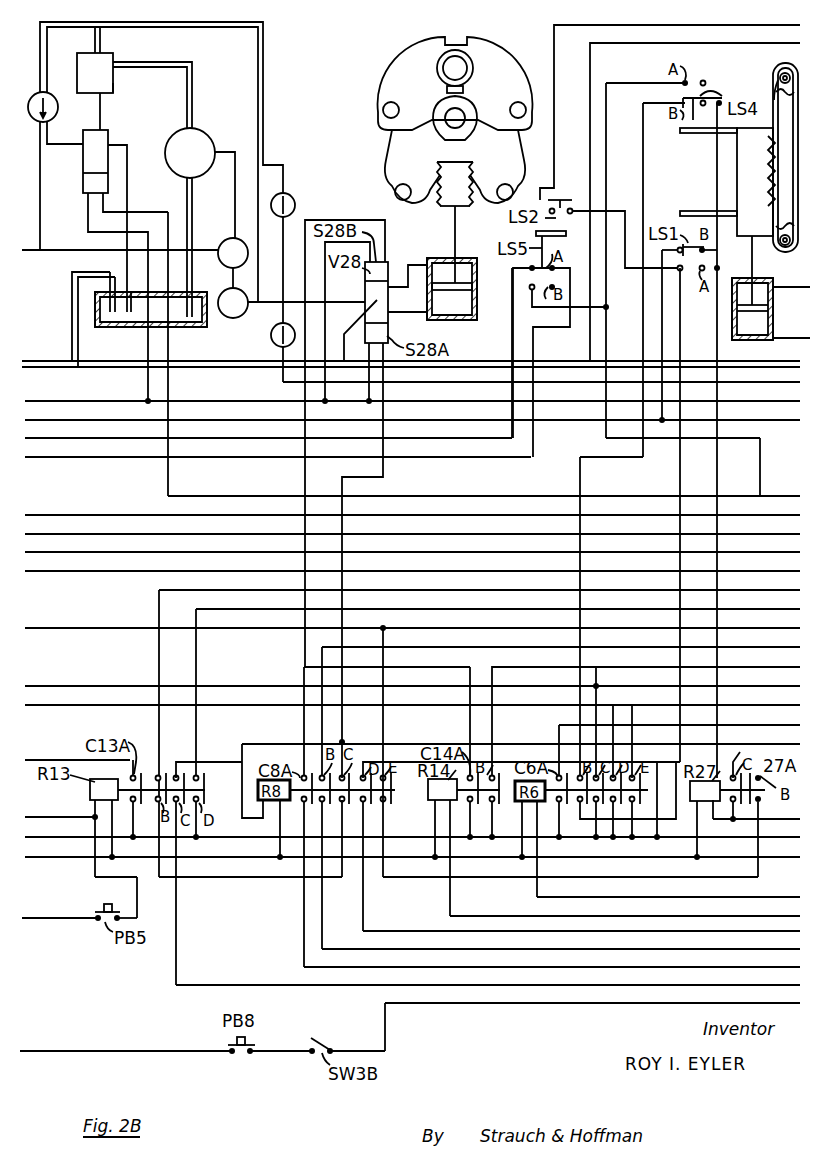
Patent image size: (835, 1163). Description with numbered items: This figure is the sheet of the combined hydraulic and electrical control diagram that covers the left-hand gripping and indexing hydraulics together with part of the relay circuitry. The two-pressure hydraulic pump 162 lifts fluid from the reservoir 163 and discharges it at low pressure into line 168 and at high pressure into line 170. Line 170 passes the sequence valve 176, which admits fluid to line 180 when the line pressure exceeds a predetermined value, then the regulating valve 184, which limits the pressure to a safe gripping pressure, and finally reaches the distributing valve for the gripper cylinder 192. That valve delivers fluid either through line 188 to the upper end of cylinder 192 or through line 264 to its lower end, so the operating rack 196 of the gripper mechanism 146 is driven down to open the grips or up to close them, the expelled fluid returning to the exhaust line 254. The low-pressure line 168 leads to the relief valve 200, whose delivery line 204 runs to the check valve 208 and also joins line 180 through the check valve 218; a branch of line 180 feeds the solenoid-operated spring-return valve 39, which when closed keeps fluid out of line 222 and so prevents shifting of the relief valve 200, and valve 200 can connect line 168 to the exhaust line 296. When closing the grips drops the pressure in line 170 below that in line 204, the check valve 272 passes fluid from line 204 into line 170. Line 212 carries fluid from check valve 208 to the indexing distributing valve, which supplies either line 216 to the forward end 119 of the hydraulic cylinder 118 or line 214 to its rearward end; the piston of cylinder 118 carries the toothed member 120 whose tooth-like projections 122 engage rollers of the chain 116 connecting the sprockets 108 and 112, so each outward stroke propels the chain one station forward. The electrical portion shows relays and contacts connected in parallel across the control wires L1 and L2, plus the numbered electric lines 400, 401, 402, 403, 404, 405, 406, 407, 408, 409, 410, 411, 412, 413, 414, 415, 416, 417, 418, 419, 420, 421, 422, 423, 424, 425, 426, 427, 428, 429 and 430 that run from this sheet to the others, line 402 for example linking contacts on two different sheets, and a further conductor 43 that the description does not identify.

The relief valve 200 is at (106, 83).
The low-pressure line 168 is at (194, 72).
The delivery line 204 is at (263, 42).
The check valve 218 is at (55, 101).
The line 222 is at (97, 119).
The solenoid-operated spring-return valve 39 is at (83, 188).
The exhaust line 296 is at (127, 172).
The two-pressure hydraulic pump 162 is at (190, 222).
The high-pressure line 170 is at (219, 152).
The check valve 272 is at (286, 205).
The sequence valve 176 is at (223, 243).
The line 180 is at (25, 250).
The regulating valve 184 is at (240, 318).
The check valve 208 is at (274, 342).
The exhaust line 254 is at (24, 360).
The reservoir 163 is at (106, 328).
The gripper mechanism 146 is at (384, 68).
The operating rack 196 is at (458, 212).
The line 188 is at (408, 265).
The line 264 is at (403, 315).
The gripper cylinder 192 is at (470, 322).
The electric line 414 is at (752, 25).
The electric line 415 is at (753, 45).
The sprocket 112 is at (772, 72).
The chain 116 is at (772, 100).
The tooth-like projections 122 is at (746, 146).
The toothed member 120 is at (744, 182).
The forward end of cylinder 119 is at (738, 282).
The sprocket 108 is at (773, 254).
The line 216 is at (779, 288).
The line 214 is at (796, 336).
The hydraulic cylinder 118 is at (763, 335).
The line 212 is at (755, 383).
The control wire L2 is at (71, 401).
The electric line 412 is at (78, 420).
The electric line 400 is at (80, 438).
The electric line 407 is at (80, 457).
The electric line 416 is at (758, 496).
The electric line 402 is at (80, 515).
The electric line 403 is at (80, 534).
The electric line 409 is at (80, 552).
The electric line 410 is at (80, 571).
The electric line 417 is at (758, 590).
The electric line 418 is at (758, 609).
The electric line 406 is at (80, 628).
The electric line 419 is at (758, 647).
The electric line 420 is at (758, 667).
The electric line 408 is at (80, 686).
The electric line 401 is at (75, 705).
The electric line 421 is at (758, 705).
The electric line 422 is at (758, 725).
The electric line 423 is at (758, 744).
The electric line 404 is at (72, 758).
The electric line 405 is at (75, 817).
The conductor 43 is at (761, 819).
The control wire L1 is at (68, 837).
The electric line 424 is at (758, 897).
The electric line 425 is at (758, 916).
The electric line 426 is at (758, 931).
The electric line 427 is at (758, 949).
The electric line 428 is at (758, 967).
The electric line 429 is at (758, 985).
The electric line 430 is at (758, 1003).
The electric line 411 is at (70, 1051).
The electric line 413 is at (75, 927).